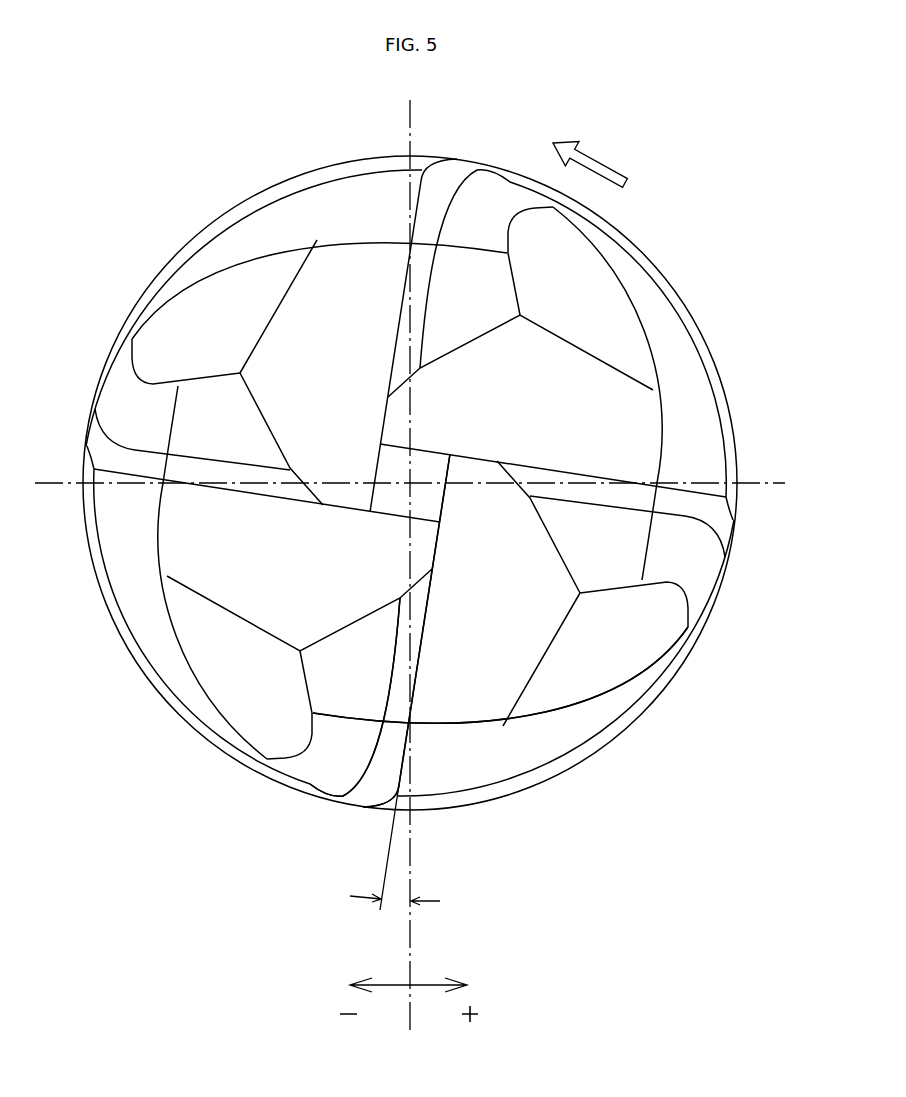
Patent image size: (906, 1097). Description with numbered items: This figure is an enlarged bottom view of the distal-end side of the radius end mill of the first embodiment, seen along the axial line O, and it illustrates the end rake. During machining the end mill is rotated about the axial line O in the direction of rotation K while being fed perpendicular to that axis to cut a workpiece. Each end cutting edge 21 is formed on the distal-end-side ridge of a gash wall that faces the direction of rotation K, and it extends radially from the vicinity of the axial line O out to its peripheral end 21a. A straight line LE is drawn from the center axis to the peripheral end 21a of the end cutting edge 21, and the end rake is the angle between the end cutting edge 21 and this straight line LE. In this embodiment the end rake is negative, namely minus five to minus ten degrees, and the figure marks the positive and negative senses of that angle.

The end cutting edge 21 is at (413, 611).
The peripheral end of the end cutting edge 21a is at (417, 724).
The axial line O is at (410, 481).
The direction of rotation K is at (580, 160).
The straight line LE is at (412, 860).